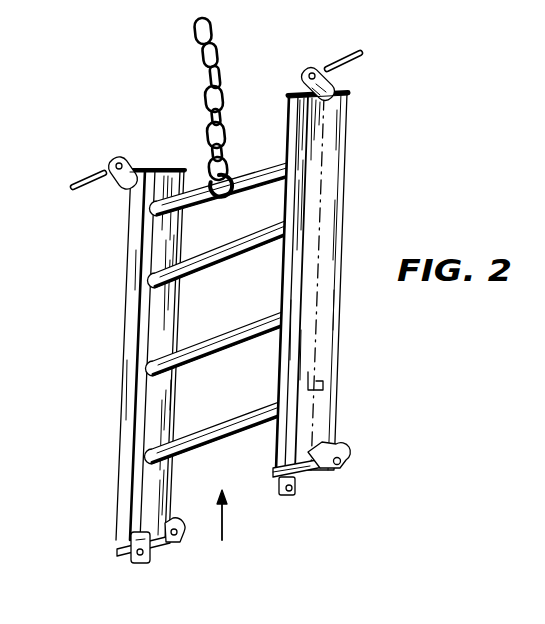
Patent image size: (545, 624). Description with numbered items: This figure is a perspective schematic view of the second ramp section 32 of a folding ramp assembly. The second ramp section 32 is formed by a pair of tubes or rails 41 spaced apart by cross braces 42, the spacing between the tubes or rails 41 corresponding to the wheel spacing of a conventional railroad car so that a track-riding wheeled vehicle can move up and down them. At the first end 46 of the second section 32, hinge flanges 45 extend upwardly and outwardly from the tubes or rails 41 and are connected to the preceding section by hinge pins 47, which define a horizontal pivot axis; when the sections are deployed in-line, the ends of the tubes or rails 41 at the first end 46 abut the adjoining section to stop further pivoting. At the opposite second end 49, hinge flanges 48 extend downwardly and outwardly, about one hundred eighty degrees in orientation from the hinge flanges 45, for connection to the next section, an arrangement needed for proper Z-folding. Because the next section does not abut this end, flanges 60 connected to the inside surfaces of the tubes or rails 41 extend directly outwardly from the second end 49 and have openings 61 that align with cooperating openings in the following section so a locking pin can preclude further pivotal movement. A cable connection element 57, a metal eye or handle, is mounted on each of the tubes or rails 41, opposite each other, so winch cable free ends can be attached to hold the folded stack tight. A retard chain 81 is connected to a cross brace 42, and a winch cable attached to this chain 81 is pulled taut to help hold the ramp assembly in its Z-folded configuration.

The second ramp section 32 is at (425, 137).
The tubes or rails 41 is at (157, 258).
The cross braces 42 is at (245, 232).
The hinge flanges 45 is at (124, 184).
The first end 46 is at (116, 83).
The hinge pins 47 is at (78, 168).
The hinge flanges 48 is at (345, 466).
The second end 49 is at (223, 533).
The cable connection element 57 is at (322, 378).
The locking flanges 60 is at (301, 483).
The openings 61 is at (287, 493).
The retard chain 81 is at (205, 60).